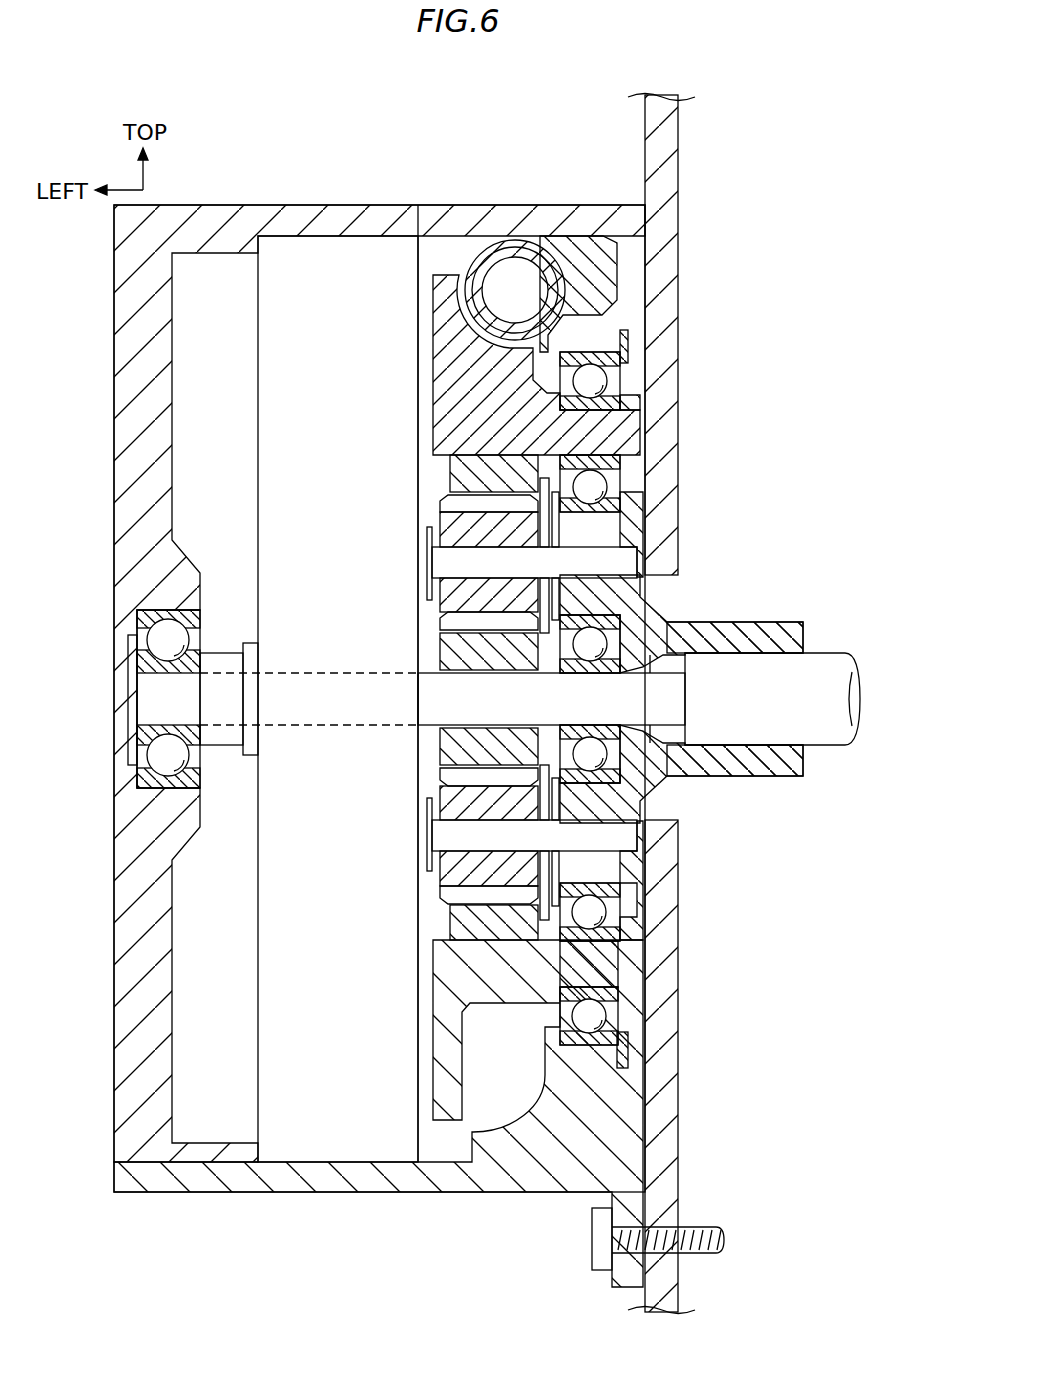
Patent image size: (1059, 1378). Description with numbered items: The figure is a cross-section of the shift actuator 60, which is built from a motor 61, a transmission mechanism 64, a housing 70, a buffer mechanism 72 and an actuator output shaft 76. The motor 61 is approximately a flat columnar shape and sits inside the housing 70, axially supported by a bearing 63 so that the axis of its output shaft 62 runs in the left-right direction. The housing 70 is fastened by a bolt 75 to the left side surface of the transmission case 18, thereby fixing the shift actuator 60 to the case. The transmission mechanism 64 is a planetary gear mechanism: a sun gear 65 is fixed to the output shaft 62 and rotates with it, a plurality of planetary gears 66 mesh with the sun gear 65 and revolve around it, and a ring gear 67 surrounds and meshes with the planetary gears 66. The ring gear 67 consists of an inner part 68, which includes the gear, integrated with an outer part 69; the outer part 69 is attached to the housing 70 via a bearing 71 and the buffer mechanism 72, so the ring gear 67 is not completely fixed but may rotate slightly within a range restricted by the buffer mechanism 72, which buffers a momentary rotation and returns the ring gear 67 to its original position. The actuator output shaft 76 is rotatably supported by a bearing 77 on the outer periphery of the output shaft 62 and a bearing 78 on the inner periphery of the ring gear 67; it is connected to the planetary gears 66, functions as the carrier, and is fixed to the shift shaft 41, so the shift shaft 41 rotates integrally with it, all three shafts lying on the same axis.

The shift actuator 60 is at (711, 122).
The transmission case 18 is at (660, 150).
The motor 61 is at (328, 262).
The housing 70 is at (498, 215).
The buffer mechanism 72 is at (565, 272).
The outer part 69 is at (513, 357).
The inner part 68 is at (557, 382).
The ring gear 67 is at (676, 402).
The bearing 71 is at (626, 400).
The bearing 78 is at (507, 447).
The transmission mechanism 64 is at (659, 680).
The planetary gears 66 is at (525, 542).
The sun gear 65 is at (505, 655).
The bearing 63 is at (140, 612).
The output shaft 62 is at (635, 700).
The shift shaft 41 is at (826, 733).
The bearing 77 is at (677, 823).
The actuator output shaft 76 is at (787, 778).
The bolt 75 is at (598, 1246).